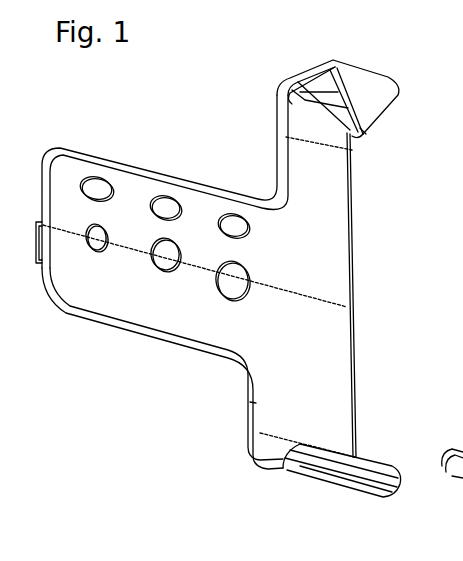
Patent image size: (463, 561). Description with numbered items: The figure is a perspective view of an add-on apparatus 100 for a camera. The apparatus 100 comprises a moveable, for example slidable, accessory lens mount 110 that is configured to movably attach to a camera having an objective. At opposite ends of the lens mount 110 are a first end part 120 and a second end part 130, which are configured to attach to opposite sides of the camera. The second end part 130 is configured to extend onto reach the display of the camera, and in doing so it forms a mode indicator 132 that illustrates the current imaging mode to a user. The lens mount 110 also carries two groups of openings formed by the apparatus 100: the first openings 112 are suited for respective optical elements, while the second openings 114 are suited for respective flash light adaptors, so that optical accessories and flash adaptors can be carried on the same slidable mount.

The apparatus 100 is at (138, 101).
The accessory lens mount 110 is at (265, 328).
The first openings 112 is at (98, 243).
The second openings 114 is at (233, 221).
The first end part 120 is at (297, 453).
The second end part 130 is at (313, 107).
The mode indicator 132 is at (367, 134).